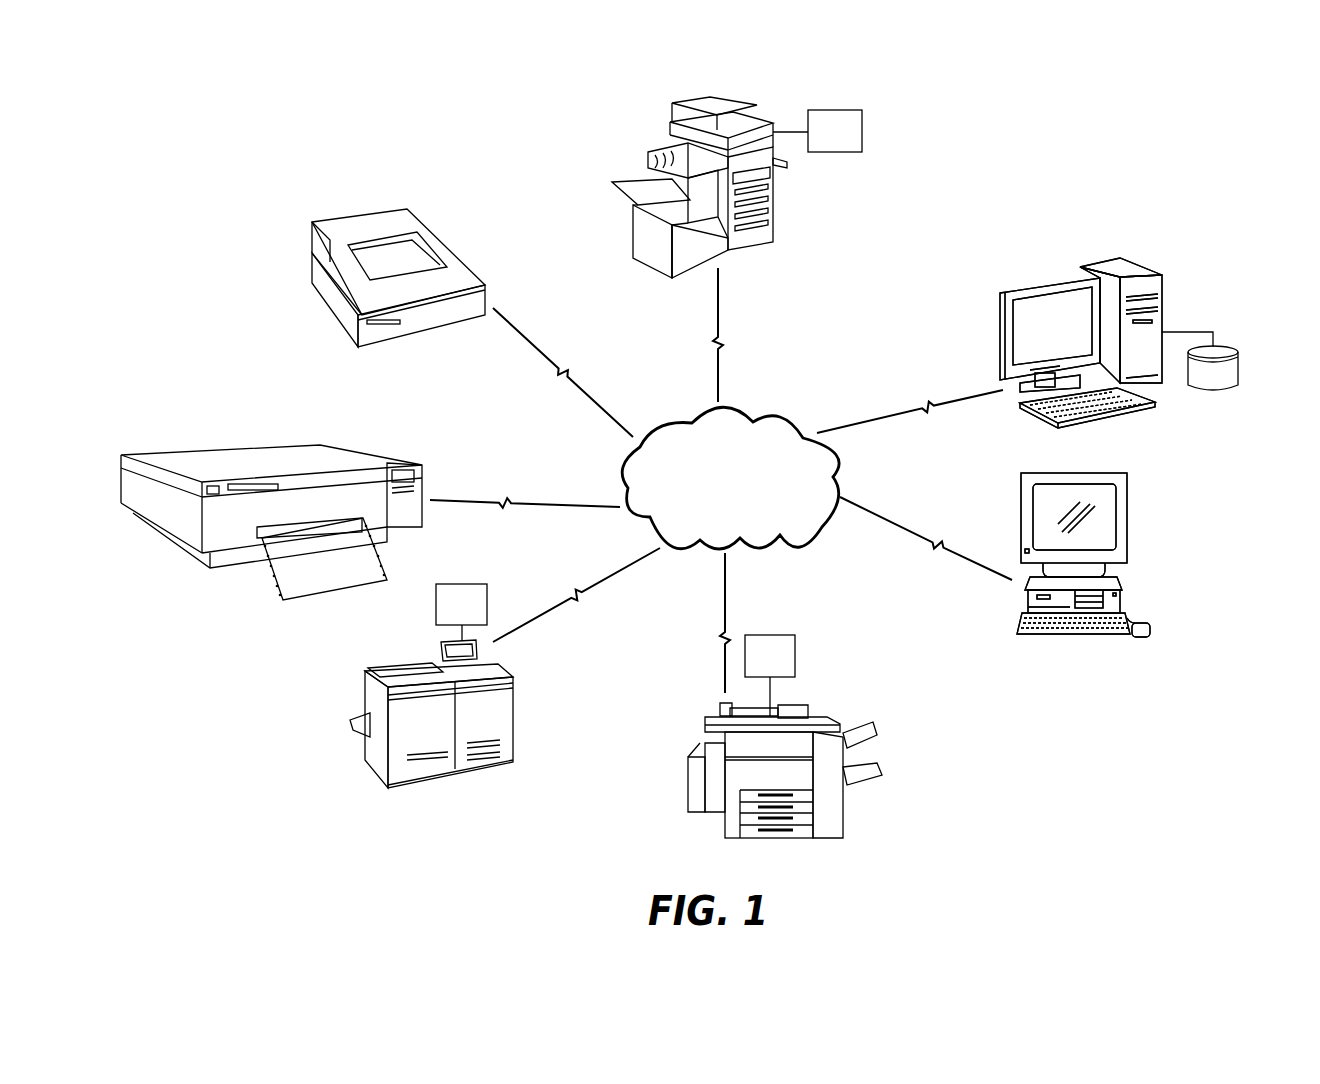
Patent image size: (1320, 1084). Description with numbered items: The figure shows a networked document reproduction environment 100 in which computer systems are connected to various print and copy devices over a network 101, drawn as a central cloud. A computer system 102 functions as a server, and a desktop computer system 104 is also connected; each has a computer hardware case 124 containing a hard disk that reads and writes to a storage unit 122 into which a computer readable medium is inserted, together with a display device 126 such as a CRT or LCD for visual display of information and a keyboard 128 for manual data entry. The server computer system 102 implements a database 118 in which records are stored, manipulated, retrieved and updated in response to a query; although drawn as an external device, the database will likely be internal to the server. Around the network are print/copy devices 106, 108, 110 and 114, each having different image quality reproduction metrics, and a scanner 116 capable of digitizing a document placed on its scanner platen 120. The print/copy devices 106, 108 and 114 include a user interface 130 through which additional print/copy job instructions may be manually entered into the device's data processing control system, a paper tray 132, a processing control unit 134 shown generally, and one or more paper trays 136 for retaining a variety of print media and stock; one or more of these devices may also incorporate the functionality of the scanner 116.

The networked document reproduction environment 100 is at (291, 92).
The network 101 is at (783, 428).
The computer system 102 is at (1062, 255).
The desktop computer system 104 is at (1160, 512).
The print/copy device 106 is at (793, 736).
The print/copy device 108 is at (402, 650).
The print/copy device 110 is at (280, 433).
The print/copy device 114 is at (642, 132).
The scanner 116 is at (413, 261).
The database 118 is at (1228, 347).
The scanner platen 120 is at (410, 257).
The storage unit 122 is at (1163, 293).
The computer hardware case 124 is at (1120, 261).
The display device 126 is at (1023, 323).
The keyboard 128 is at (1118, 410).
The user interface 130 is at (775, 637).
The paper tray 132 is at (868, 740).
The processing control unit 134 is at (743, 777).
The paper trays 136 is at (792, 834).